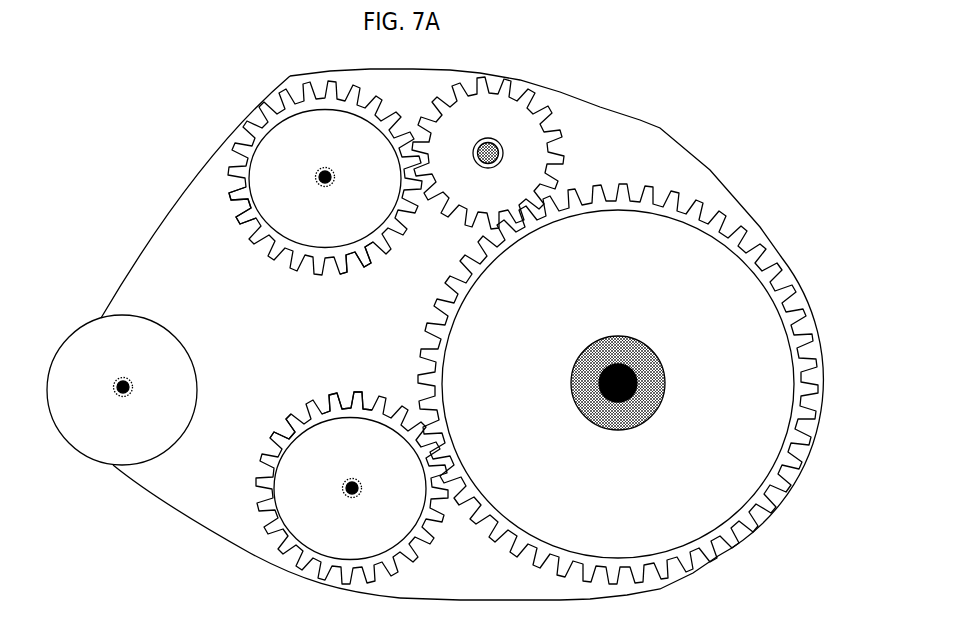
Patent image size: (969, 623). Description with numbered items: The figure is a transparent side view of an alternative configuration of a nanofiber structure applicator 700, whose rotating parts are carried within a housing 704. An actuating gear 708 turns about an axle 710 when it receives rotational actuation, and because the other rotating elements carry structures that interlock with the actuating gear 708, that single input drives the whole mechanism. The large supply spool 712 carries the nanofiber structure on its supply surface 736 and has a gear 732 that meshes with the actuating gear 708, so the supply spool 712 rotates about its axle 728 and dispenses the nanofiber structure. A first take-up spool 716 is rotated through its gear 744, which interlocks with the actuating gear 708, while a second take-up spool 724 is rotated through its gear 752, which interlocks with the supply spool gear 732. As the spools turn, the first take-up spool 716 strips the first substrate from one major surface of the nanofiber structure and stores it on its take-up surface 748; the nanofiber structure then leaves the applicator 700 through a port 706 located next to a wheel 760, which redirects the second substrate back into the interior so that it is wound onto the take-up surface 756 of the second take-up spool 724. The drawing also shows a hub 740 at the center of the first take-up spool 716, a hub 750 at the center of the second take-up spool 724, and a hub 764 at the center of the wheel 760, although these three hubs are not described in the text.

The nanofiber structure applicator 700 is at (80, 152).
The housing 704 is at (124, 282).
The port 706 is at (120, 307).
The actuating gear 708 is at (560, 133).
The axle 710 is at (479, 157).
The supply spool 712 is at (618, 339).
The first take-up spool 716 is at (262, 417).
The second take-up spool 724 is at (292, 280).
The axle 728 is at (652, 347).
The gear 732 is at (675, 196).
The supply surface 736 is at (681, 222).
The second driven gear hub 740 is at (350, 494).
The gear 744 is at (397, 407).
The take-up surface 748 is at (325, 414).
The first driven gear hub 750 is at (328, 186).
The gear 752 is at (238, 222).
The take-up surface 756 is at (348, 248).
The wheel 760 is at (52, 366).
The roller hub 764 is at (125, 396).